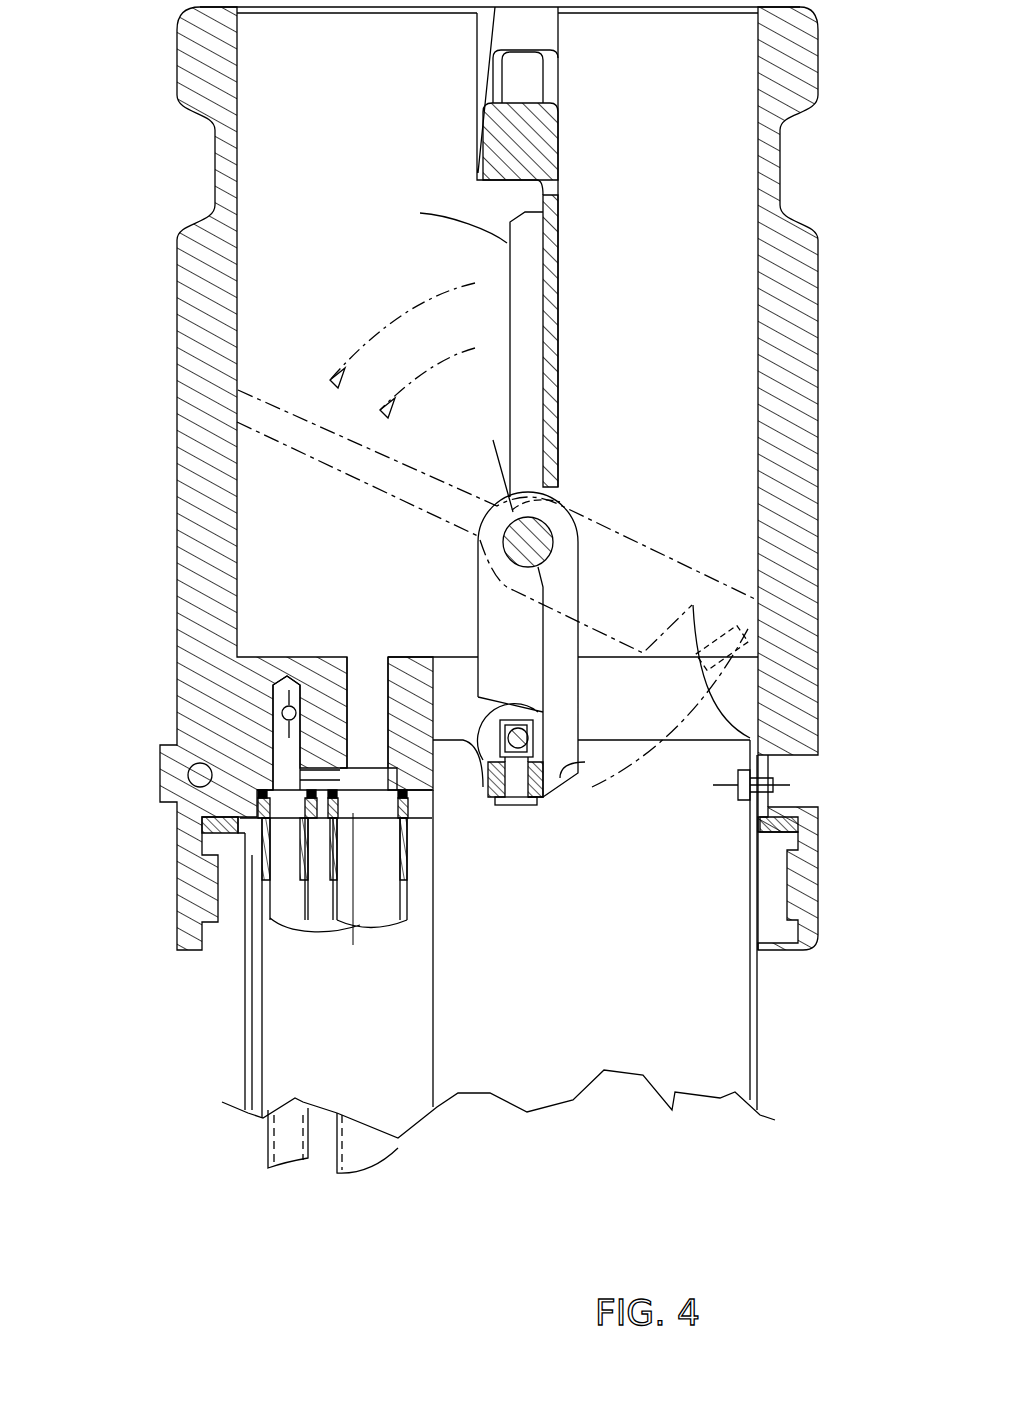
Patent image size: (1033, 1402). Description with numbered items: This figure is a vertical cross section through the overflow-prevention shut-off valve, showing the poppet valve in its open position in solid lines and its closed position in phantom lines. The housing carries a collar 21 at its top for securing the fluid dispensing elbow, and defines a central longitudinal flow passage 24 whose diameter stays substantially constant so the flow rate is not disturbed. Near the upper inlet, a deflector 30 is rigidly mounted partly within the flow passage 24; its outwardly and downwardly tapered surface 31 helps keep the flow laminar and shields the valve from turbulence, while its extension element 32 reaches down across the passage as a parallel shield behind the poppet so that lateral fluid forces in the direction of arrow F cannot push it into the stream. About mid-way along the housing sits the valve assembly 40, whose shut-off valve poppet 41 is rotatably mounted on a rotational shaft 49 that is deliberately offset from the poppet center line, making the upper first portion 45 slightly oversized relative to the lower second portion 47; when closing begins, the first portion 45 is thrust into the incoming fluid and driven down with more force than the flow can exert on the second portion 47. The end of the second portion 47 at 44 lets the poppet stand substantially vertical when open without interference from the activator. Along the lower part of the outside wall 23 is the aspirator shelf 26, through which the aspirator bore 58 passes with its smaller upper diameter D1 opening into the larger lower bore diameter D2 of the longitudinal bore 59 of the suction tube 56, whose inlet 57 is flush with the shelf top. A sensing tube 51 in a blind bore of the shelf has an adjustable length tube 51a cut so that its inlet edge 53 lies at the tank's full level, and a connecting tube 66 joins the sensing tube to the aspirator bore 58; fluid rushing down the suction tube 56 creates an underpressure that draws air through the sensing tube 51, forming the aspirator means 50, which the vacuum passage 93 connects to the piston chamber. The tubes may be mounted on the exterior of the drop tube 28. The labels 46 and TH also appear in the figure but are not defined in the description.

The collar 21 is at (240, 197).
The outside wall 23 is at (238, 607).
The flow passage 24 is at (296, 472).
The aspirator shelf 26 is at (317, 657).
The drop tube 28 is at (258, 1007).
The deflector 30 is at (548, 150).
The tapered surface 31 is at (490, 148).
The extension element 32 is at (553, 372).
The valve assembly 40 is at (470, 459).
The shut-off valve poppet 41 is at (552, 378).
The end of second portion 44 is at (518, 740).
The first portion 45 is at (318, 445).
The cam surface 46 is at (662, 830).
The second portion 47 is at (620, 602).
The rotational shaft 49 is at (532, 540).
The aspirator means 50 is at (252, 843).
The sensing tube 51 is at (275, 740).
The adjustable length tube 51a is at (262, 928).
The inlet edge 53 is at (288, 1165).
The suction tube 56 is at (405, 830).
The inlet 57 is at (368, 657).
The aspirator bore 58 is at (433, 790).
The longitudinal bore 59 is at (383, 905).
The connecting tube 66 is at (320, 772).
The vacuum passage 93 is at (253, 657).
The smaller upper diameter D1 is at (300, 700).
The lower bore diameter D2 is at (393, 807).
The tooth thickness TH is at (477, 158).
The arrow F is at (572, 205).